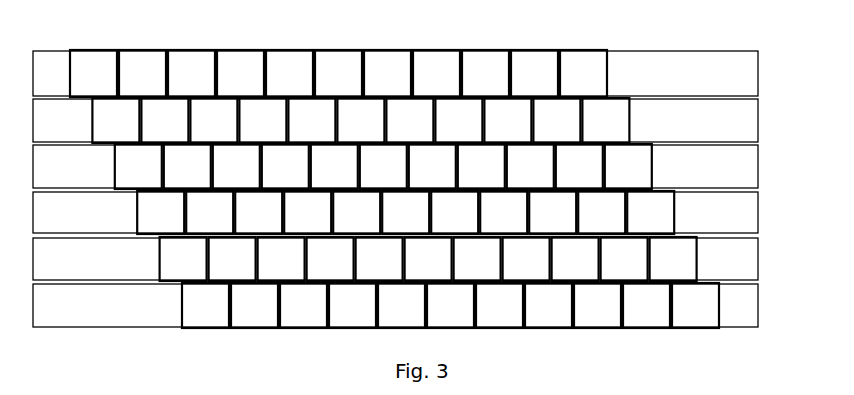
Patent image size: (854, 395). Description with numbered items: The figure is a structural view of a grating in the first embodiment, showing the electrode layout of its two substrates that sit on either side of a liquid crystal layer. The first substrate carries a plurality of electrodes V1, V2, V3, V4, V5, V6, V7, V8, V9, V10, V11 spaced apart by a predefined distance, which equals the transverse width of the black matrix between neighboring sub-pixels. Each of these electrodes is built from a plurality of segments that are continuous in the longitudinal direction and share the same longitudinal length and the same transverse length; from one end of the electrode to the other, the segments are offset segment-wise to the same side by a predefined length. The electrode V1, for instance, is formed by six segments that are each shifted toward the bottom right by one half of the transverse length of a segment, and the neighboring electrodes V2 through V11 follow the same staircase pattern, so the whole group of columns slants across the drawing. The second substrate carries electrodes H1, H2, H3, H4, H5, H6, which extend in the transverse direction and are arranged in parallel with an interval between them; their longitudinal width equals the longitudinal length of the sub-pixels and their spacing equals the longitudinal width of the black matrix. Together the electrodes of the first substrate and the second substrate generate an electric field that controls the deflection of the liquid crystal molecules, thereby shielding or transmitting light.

The electrode of the second substrate H1 is at (418, 73).
The electrode of the second substrate H2 is at (418, 120).
The electrode of the second substrate H3 is at (418, 166).
The electrode of the second substrate H4 is at (418, 212).
The electrode of the second substrate H5 is at (418, 259).
The electrode of the second substrate H6 is at (418, 305).
The electrode of the first substrate V1 is at (149, 173).
The electrode of the first substrate V2 is at (198, 173).
The electrode of the first substrate V3 is at (247, 173).
The electrode of the first substrate V4 is at (296, 173).
The electrode of the first substrate V5 is at (345, 173).
The electrode of the first substrate V6 is at (394, 173).
The electrode of the first substrate V7 is at (443, 173).
The electrode of the first substrate V8 is at (492, 173).
The electrode of the first substrate V9 is at (541, 173).
The electrode of the first substrate V10 is at (590, 173).
The electrode of the first substrate V11 is at (639, 173).